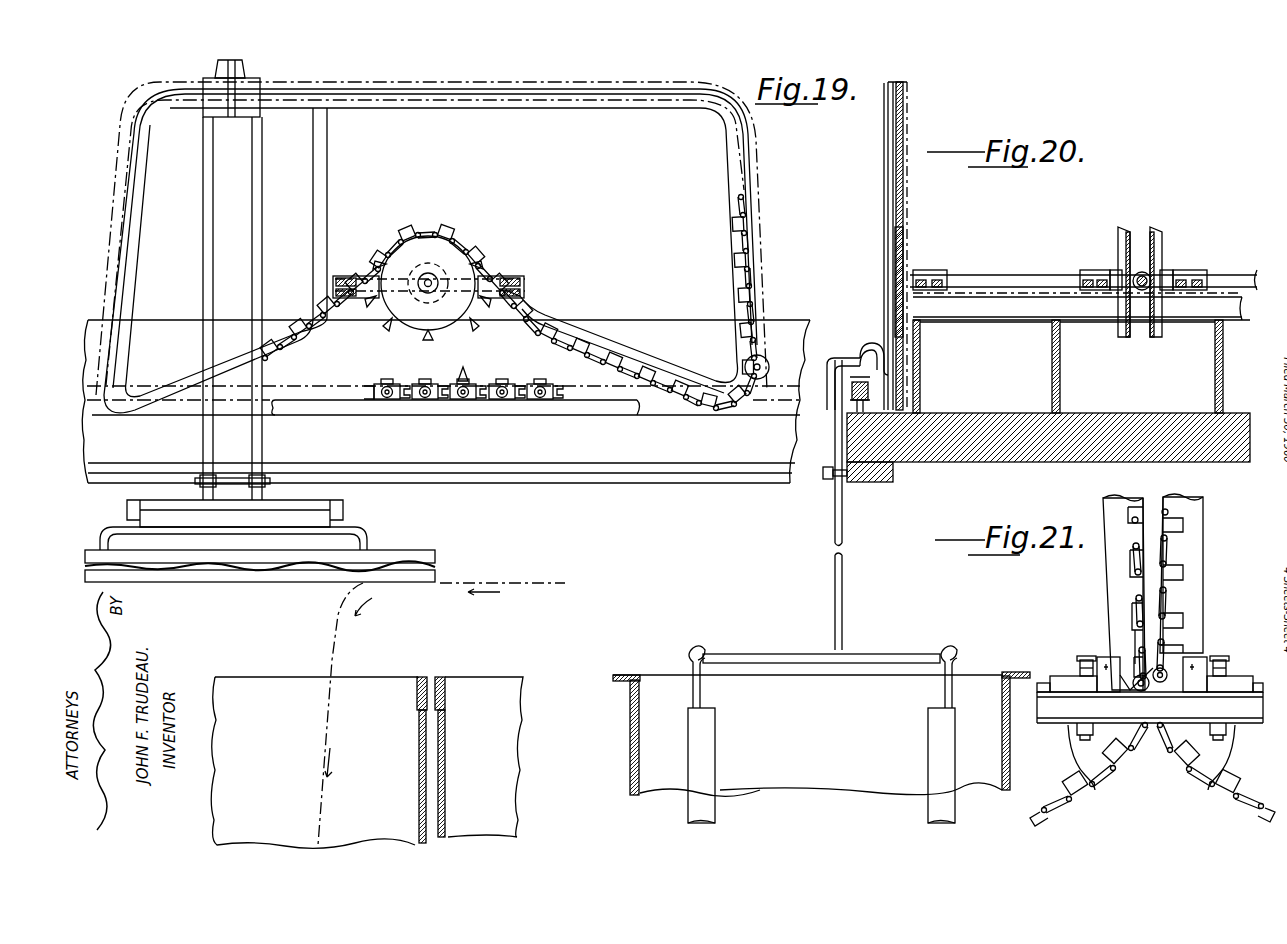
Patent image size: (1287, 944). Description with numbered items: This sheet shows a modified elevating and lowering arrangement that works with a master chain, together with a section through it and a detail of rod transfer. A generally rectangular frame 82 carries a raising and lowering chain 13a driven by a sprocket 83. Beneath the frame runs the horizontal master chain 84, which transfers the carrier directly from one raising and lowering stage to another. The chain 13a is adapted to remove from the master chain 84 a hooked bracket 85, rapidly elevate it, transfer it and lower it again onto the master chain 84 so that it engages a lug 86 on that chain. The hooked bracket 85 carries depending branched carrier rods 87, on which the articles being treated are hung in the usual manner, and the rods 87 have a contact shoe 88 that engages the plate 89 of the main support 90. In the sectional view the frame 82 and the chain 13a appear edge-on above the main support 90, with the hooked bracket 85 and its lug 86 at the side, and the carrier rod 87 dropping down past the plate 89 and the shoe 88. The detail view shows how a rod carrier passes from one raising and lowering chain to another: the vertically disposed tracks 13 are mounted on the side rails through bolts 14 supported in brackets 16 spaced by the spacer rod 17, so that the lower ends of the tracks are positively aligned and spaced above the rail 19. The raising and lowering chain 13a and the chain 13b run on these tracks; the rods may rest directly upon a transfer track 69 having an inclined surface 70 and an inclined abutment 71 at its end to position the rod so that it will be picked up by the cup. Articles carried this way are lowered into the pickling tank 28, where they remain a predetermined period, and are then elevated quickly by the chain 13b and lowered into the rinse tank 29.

In FIG. 21, the raising and lowering track 13 is at (1105, 580).
In FIG. 19, the raising and lowering chain 13a is at (755, 280).
In FIG. 20, the raising and lowering chain 13a is at (906, 96).
In FIG. 21, the raising and lowering chain 13a is at (1170, 558).
In FIG. 21, the raising and lowering chain 13b is at (1133, 620).
In FIG. 21, the bolt 14 is at (1084, 660).
In FIG. 21, the bracket 16 is at (1062, 680).
In FIG. 21, the spacer rod 17 is at (1040, 682).
In FIG. 21, the rail 19 is at (1057, 725).
In FIG. 19, the pickling tank 28 is at (486, 690).
In FIG. 19, the rinse tank 29 is at (240, 690).
In FIG. 21, the transfer track 69 is at (1150, 680).
In FIG. 21, the inclined surface 70 is at (1175, 680).
In FIG. 21, the inclined abutment 71 is at (1122, 670).
In FIG. 19, the rectangular frame 82 is at (618, 104).
In FIG. 20, the rectangular frame 82 is at (905, 125).
In FIG. 19, the sprocket 83 is at (455, 262).
In FIG. 20, the sprocket 83 is at (905, 231).
In FIG. 19, the horizontal master chain 84 is at (485, 420).
In FIG. 19, the hooked bracket 85 is at (218, 70).
In FIG. 20, the hooked bracket 85 is at (860, 355).
In FIG. 19, the lug 86 is at (465, 368).
In FIG. 20, the lug 86 is at (842, 362).
In FIG. 19, the carrier rod 87 is at (253, 250).
In FIG. 20, the carrier rod 87 is at (842, 538).
In FIG. 19, the contact shoe 88 is at (315, 480).
In FIG. 20, the contact shoe 88 is at (840, 480).
In FIG. 19, the plate 89 is at (365, 471).
In FIG. 20, the plate 89 is at (895, 480).
In FIG. 19, the main support 90 is at (443, 455).
In FIG. 20, the main support 90 is at (990, 462).